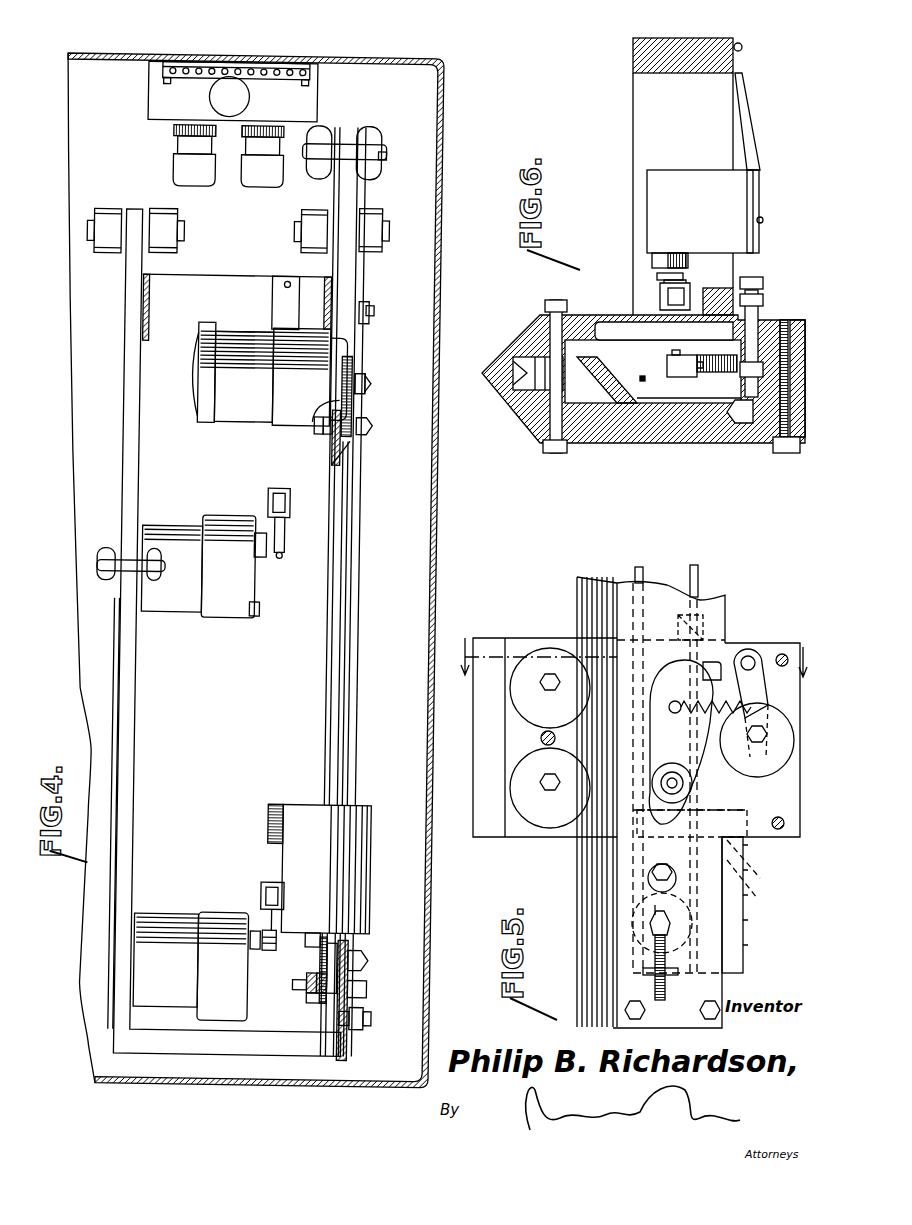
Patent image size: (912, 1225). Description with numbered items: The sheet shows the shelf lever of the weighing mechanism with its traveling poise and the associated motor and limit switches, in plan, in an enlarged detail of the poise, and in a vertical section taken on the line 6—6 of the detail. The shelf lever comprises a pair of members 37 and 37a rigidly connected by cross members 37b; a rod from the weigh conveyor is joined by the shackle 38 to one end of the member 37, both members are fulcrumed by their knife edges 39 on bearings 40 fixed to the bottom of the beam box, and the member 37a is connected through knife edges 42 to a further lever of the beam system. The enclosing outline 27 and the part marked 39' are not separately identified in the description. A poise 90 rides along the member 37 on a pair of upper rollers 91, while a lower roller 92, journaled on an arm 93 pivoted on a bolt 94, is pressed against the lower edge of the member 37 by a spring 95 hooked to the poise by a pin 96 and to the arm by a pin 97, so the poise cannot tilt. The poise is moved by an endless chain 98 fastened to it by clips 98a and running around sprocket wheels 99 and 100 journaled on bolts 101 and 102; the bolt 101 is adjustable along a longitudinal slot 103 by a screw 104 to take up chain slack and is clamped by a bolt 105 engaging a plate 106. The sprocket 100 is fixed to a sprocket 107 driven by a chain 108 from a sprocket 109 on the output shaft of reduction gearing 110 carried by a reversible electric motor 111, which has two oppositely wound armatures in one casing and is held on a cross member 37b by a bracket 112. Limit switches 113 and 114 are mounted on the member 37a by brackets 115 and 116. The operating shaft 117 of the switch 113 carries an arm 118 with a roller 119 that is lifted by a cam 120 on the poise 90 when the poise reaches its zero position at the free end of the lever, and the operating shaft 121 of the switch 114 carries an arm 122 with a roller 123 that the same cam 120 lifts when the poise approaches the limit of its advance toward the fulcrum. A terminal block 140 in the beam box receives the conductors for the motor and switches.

In FIG. 4, the housing 27 is at (364, 56).
In FIG. 4, the shelf lever member 37 is at (346, 579).
In FIG. 6, the shelf lever member 37 is at (632, 410).
In FIG. 5, the shelf lever member 37 is at (586, 612).
In FIG. 4, the shelf lever member 37a is at (121, 728).
In FIG. 6, the shelf lever member 37a is at (633, 62).
In FIG. 4, the cross members 37b is at (228, 276).
In FIG. 6, the cross members 37b is at (633, 197).
In FIG. 4, the shackle 38 is at (339, 145).
In FIG. 4, the knife edges 39 is at (184, 209).
In FIG. 4, the roller pin 39' is at (386, 146).
In FIG. 4, the bearings 40 is at (368, 248).
In FIG. 4, the knife edges 42 is at (105, 566).
In FIG. 5, the section line 6 is at (628, 657).
In FIG. 4, the poise 90 is at (314, 807).
In FIG. 5, the poise 90 is at (508, 640).
In FIG. 6, the upper rollers 91 is at (530, 390).
In FIG. 5, the upper rollers 91 is at (520, 760).
In FIG. 6, the lower roller 92 is at (742, 423).
In FIG. 5, the lower roller 92 is at (775, 757).
In FIG. 6, the arm 93 is at (780, 385).
In FIG. 5, the arm 93 is at (767, 678).
In FIG. 6, the bolt 94 is at (763, 320).
In FIG. 5, the bolt 94 is at (748, 656).
In FIG. 6, the spring 95 is at (705, 356).
In FIG. 5, the spring 95 is at (699, 648).
In FIG. 6, the pin 96 is at (672, 378).
In FIG. 5, the pin 96 is at (675, 700).
In FIG. 5, the pin 97 is at (749, 703).
In FIG. 4, the endless chain 98 is at (326, 972).
In FIG. 6, the endless chain 98 is at (622, 400).
In FIG. 5, the endless chain 98 is at (690, 760).
In FIG. 4, the clips 98a is at (320, 803).
In FIG. 5, the clips 98a is at (687, 618).
In FIG. 4, the sprocket wheel 99 is at (320, 1000).
In FIG. 5, the sprocket wheel 99 is at (670, 935).
In FIG. 4, the sprocket wheel 100 is at (330, 437).
In FIG. 4, the bolt 101 is at (362, 431).
In FIG. 5, the bolt 101 is at (650, 918).
In FIG. 4, the bolt 102 is at (312, 426).
In FIG. 5, the longitudinal slot 103 is at (676, 882).
In FIG. 4, the screw 104 is at (378, 1018).
In FIG. 5, the screw 104 is at (643, 972).
In FIG. 4, the bolt 105 is at (374, 960).
In FIG. 5, the bolt 105 is at (650, 878).
In FIG. 4, the plate 106 is at (354, 940).
In FIG. 4, the sprocket 107 is at (349, 461).
In FIG. 4, the chain 108 is at (350, 396).
In FIG. 4, the sprocket 109 is at (350, 359).
In FIG. 4, the reduction gearing 110 is at (310, 377).
In FIG. 4, the reversible electric motor 111 is at (260, 373).
In FIG. 4, the bracket 112 is at (275, 293).
In FIG. 4, the limit switch 113 is at (220, 966).
In FIG. 4, the limit switch 114 is at (223, 566).
In FIG. 4, the bracket 115 is at (189, 960).
In FIG. 6, the bracket 115 is at (757, 147).
In FIG. 4, the bracket 116 is at (171, 568).
In FIG. 4, the operating shaft 117 is at (266, 912).
In FIG. 6, the operating shaft 117 is at (665, 260).
In FIG. 4, the arm 118 is at (268, 933).
In FIG. 6, the arm 118 is at (657, 277).
In FIG. 5, the arm 118 is at (661, 796).
In FIG. 4, the roller 119 is at (276, 887).
In FIG. 6, the roller 119 is at (660, 295).
In FIG. 5, the roller 119 is at (662, 770).
In FIG. 4, the cam 120 is at (278, 812).
In FIG. 6, the cam 120 is at (712, 290).
In FIG. 5, the cam 120 is at (700, 808).
In FIG. 4, the operating shaft 121 is at (262, 605).
In FIG. 4, the arm 122 is at (290, 526).
In FIG. 4, the roller 123 is at (276, 489).
In FIG. 4, the terminal block 140 is at (149, 97).